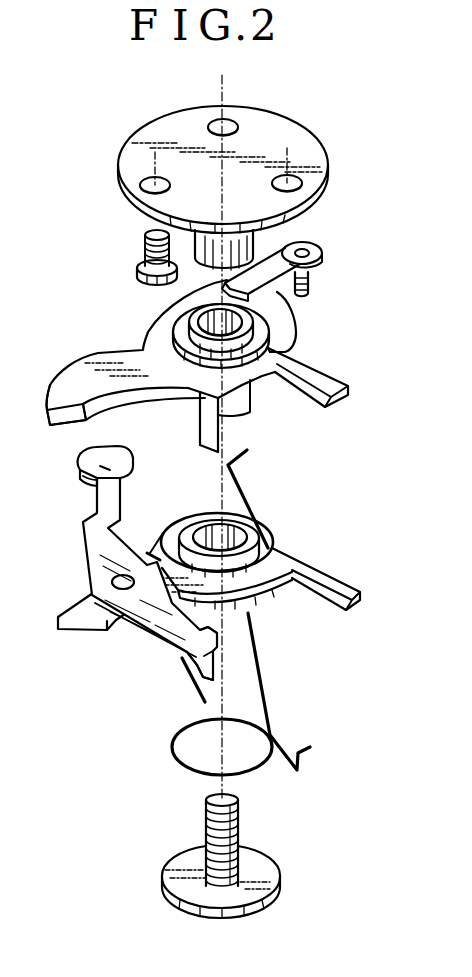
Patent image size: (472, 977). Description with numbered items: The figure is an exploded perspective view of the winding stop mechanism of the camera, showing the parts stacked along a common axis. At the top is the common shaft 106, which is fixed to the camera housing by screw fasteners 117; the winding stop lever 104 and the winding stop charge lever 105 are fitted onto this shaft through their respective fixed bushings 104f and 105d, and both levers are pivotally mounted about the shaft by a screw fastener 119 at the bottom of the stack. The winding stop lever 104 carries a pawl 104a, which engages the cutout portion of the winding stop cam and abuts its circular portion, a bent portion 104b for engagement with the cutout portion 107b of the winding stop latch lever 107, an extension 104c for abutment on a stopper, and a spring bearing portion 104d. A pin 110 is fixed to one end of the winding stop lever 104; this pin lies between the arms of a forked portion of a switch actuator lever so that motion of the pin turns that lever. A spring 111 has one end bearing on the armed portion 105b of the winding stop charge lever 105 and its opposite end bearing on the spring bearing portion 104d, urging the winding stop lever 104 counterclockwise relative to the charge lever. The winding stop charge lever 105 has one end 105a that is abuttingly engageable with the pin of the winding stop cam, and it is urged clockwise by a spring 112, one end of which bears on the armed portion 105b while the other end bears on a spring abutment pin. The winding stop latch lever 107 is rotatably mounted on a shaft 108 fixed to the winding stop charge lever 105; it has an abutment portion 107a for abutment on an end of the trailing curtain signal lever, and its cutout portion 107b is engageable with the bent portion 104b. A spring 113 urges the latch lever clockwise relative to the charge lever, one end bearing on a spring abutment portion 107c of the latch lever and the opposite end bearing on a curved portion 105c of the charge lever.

The common shaft 106 is at (290, 131).
The screw fastener 117 is at (140, 262).
The pin 110 is at (312, 281).
The spring bearing portion 104d is at (262, 278).
The winding stop lever 104 is at (210, 375).
The pawl 104a is at (70, 427).
The bent portion 104b is at (223, 432).
The extension 104c is at (327, 384).
The fixed bushing 104f is at (263, 335).
The spring 111 is at (245, 478).
The winding stop charge lever 105 is at (240, 592).
The one end of winding stop charge lever 105a is at (83, 633).
The armed portion 105b is at (350, 586).
The curved portion 105c is at (152, 551).
The fixed bushing 105d is at (250, 548).
The winding stop latch lever 107 is at (166, 570).
The abutment portion 107a is at (82, 476).
The cutout portion 107b is at (218, 642).
The spring abutment portion 107c is at (184, 662).
The shaft 108 is at (112, 580).
The spring 112 is at (266, 678).
The spring 113 is at (200, 696).
The screw fastener 119 is at (257, 862).